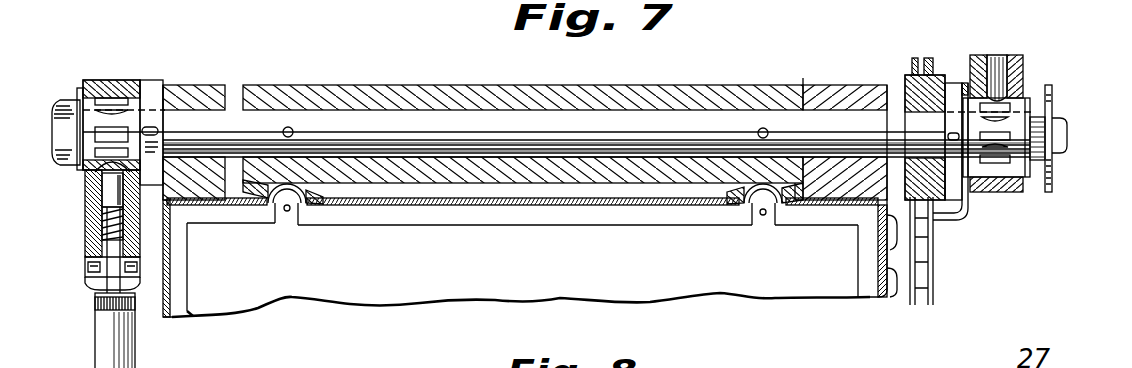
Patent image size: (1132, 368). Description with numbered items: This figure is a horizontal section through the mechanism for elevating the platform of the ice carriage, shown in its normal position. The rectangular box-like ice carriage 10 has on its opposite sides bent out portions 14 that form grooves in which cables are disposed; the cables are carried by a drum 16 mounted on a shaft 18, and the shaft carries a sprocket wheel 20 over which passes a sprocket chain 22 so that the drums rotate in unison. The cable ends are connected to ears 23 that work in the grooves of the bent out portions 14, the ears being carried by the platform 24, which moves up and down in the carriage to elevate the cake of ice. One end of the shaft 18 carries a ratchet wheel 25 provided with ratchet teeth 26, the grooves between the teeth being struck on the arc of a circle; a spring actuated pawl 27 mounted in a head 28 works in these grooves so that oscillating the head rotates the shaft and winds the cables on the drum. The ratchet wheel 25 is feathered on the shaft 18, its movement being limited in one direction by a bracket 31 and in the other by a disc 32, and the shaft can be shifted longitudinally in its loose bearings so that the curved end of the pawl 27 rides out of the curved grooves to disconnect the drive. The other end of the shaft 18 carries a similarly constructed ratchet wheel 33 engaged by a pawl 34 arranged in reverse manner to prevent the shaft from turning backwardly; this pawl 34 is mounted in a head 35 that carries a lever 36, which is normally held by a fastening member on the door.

The ice carriage 10 is at (170, 262).
The bent out portions 14 is at (325, 188).
The drum 16 is at (487, 100).
The shaft 18 is at (345, 125).
The sprocket wheel 20 is at (905, 82).
The sprocket chain 22 is at (935, 265).
The ears 23 is at (287, 218).
The platform 24 is at (521, 270).
The ratchet wheel 25 is at (1021, 102).
The ratchet teeth 26 is at (1058, 120).
The spring actuated pawl 27 is at (998, 54).
The head 28 is at (972, 60).
The bracket 31 is at (955, 203).
The disc 32 is at (1052, 92).
The ratchet wheel 33 is at (90, 115).
The pawl 34 is at (113, 190).
The head 35 is at (100, 230).
The lever 36 is at (100, 333).